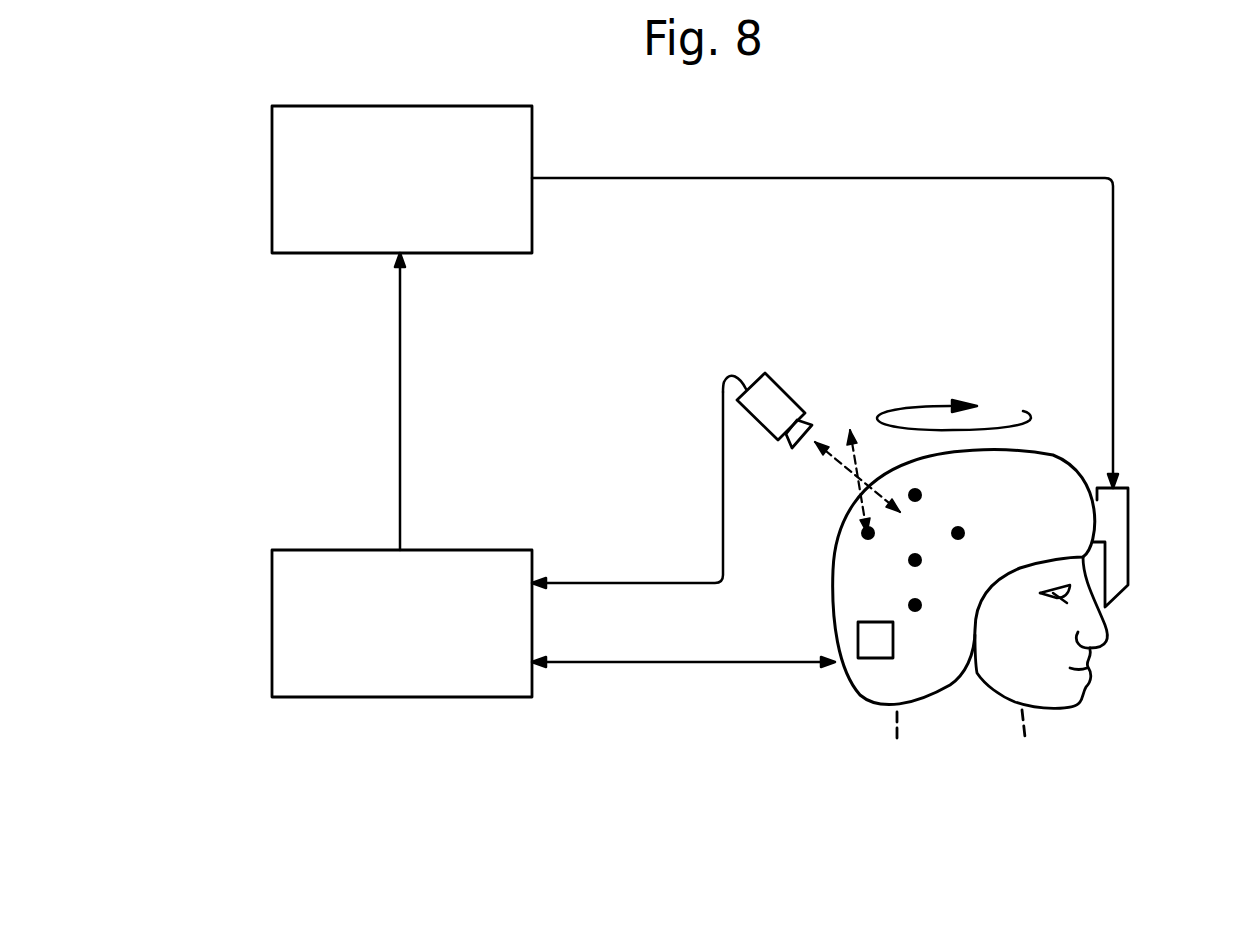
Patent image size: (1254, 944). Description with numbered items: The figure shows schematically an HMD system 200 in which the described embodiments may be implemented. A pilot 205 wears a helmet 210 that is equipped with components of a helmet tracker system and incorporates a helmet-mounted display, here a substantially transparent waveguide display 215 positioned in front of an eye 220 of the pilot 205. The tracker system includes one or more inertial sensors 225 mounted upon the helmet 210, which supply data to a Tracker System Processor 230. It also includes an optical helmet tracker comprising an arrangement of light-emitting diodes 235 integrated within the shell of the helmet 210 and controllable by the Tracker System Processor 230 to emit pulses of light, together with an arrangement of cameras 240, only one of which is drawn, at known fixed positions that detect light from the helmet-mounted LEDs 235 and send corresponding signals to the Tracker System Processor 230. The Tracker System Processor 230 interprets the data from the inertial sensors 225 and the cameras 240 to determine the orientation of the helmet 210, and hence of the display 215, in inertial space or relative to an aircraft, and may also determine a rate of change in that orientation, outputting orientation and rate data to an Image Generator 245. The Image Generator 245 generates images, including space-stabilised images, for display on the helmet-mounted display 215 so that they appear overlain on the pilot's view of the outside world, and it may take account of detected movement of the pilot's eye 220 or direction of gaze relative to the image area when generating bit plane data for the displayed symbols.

The head tracking system 200 is at (434, 829).
The pilot 205 is at (1065, 693).
The helmet 210 is at (868, 685).
The waveguide display 215 is at (1118, 557).
The eye 220 is at (1053, 597).
The inertial sensors 225 is at (870, 633).
The Tracker System Processor 230 is at (296, 628).
The light-emitting diodes 235 is at (913, 560).
The cameras 240 is at (773, 395).
The Image Generator 245 is at (303, 167).